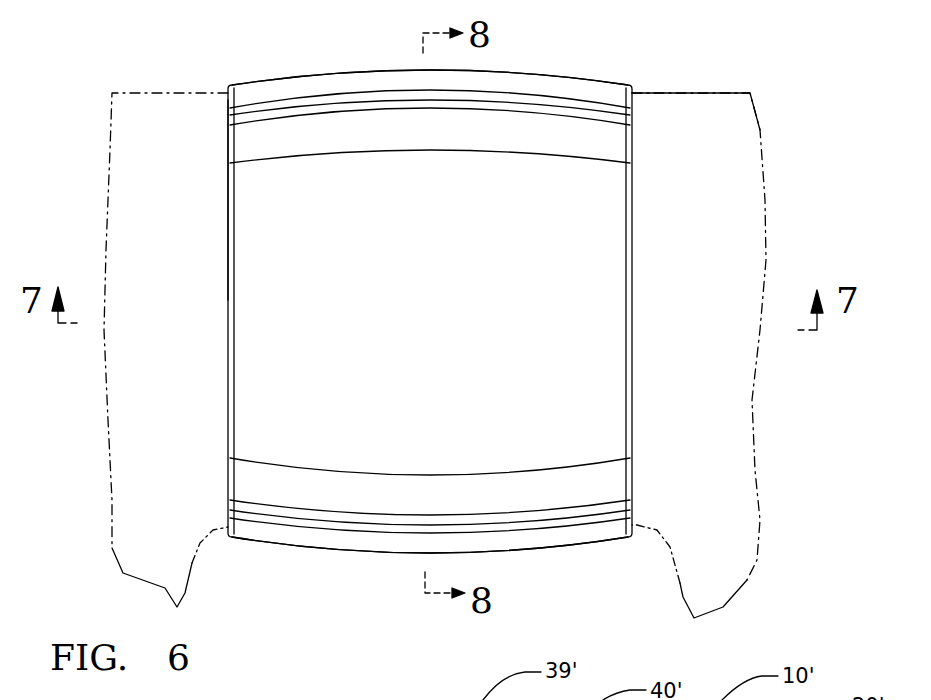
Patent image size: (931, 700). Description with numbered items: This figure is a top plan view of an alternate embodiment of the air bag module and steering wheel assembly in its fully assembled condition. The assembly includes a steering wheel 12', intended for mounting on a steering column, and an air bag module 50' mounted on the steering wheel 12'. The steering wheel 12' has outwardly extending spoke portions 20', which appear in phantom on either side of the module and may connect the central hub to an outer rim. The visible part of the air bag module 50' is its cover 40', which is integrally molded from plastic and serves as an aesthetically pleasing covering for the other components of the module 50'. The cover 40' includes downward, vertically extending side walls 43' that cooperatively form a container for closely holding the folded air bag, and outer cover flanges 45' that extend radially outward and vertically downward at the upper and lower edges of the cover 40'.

The cover 40' is at (488, 311).
The side walls 43' is at (435, 310).
The outer cover flanges 45' is at (432, 313).
The air bag module 50' is at (174, 200).
The spoke portions 20' is at (452, 337).
The steering wheel 12' is at (745, 82).